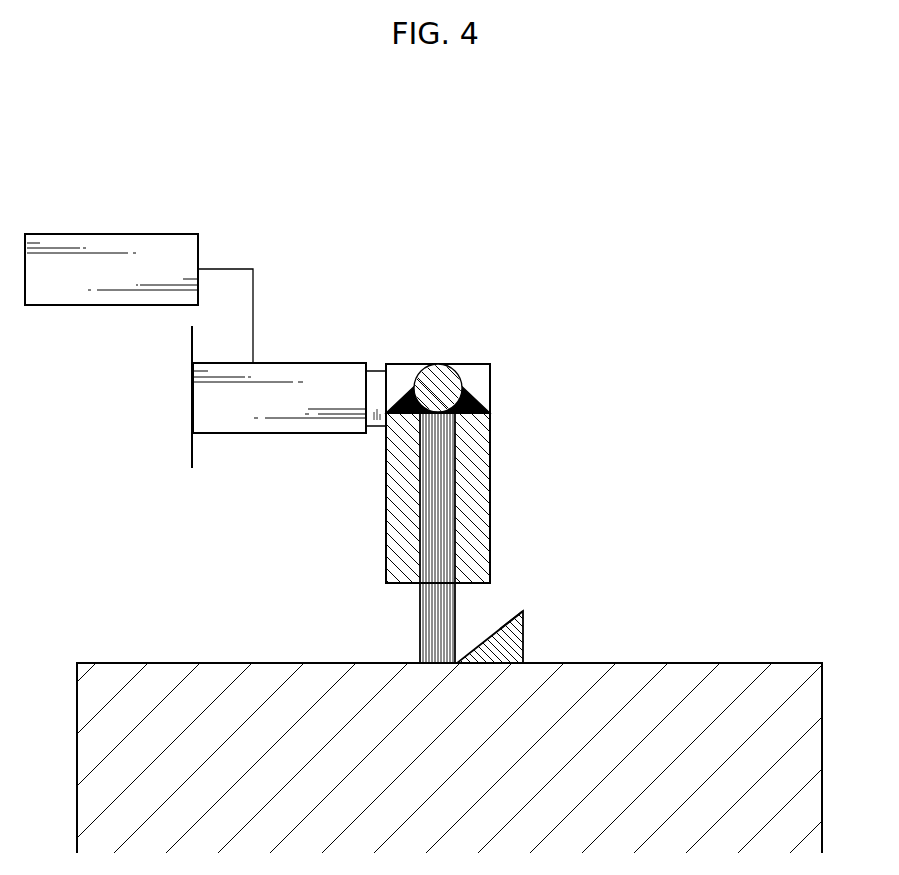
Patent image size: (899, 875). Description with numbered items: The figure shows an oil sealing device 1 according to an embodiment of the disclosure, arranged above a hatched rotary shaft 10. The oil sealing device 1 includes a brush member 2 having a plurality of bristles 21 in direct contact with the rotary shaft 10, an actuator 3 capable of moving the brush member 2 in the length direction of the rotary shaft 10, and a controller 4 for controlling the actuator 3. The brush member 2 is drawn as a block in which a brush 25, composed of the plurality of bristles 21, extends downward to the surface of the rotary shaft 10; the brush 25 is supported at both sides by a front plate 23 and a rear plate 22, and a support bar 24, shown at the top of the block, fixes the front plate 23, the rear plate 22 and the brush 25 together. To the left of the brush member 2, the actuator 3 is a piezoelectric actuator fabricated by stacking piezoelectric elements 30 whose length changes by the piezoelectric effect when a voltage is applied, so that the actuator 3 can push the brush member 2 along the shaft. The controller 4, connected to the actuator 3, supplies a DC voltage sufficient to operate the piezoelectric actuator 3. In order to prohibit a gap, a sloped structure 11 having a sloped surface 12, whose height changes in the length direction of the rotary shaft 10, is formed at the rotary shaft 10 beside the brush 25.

The oil sealing device 1 is at (558, 333).
The brush member 2 is at (492, 438).
The actuator 3 is at (315, 363).
The controller 4 is at (163, 234).
The rotary shaft 10 is at (738, 663).
The sloped structure 11 is at (523, 638).
The sloped surface 12 is at (503, 625).
The bristles 21 is at (428, 528).
The rear plate 22 is at (385, 475).
The front plate 23 is at (482, 472).
The support bar 24 is at (435, 373).
The brush 25 is at (420, 614).
The piezoelectric elements 30 is at (266, 418).